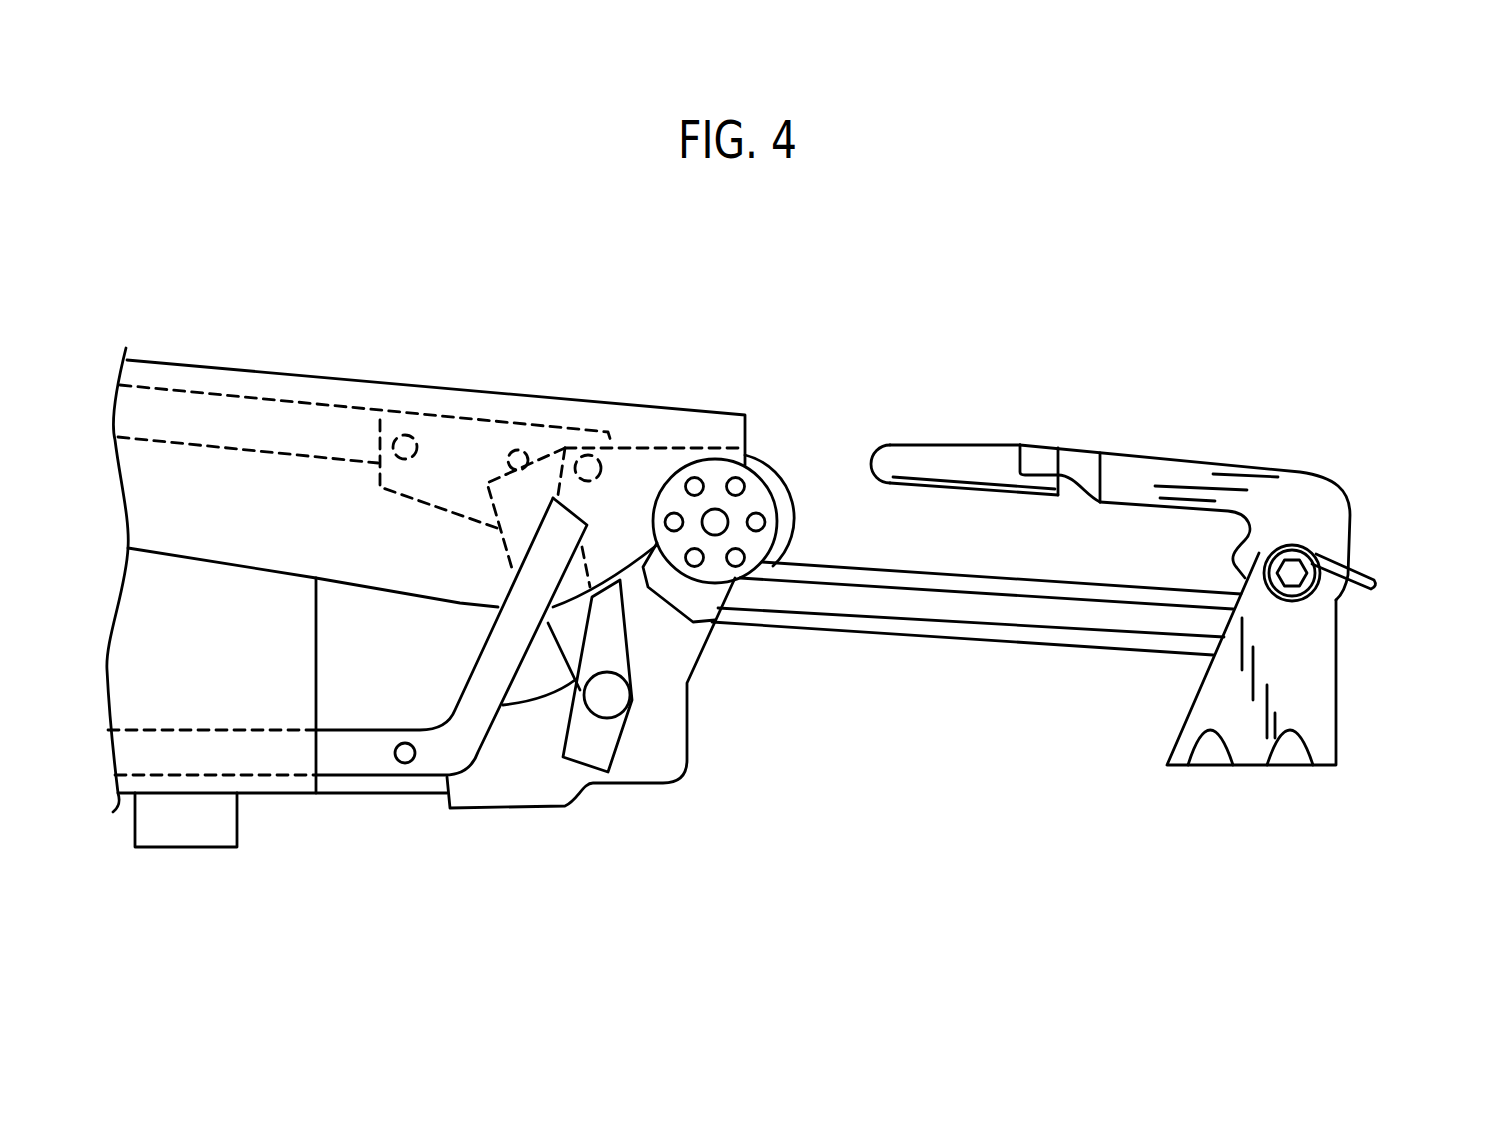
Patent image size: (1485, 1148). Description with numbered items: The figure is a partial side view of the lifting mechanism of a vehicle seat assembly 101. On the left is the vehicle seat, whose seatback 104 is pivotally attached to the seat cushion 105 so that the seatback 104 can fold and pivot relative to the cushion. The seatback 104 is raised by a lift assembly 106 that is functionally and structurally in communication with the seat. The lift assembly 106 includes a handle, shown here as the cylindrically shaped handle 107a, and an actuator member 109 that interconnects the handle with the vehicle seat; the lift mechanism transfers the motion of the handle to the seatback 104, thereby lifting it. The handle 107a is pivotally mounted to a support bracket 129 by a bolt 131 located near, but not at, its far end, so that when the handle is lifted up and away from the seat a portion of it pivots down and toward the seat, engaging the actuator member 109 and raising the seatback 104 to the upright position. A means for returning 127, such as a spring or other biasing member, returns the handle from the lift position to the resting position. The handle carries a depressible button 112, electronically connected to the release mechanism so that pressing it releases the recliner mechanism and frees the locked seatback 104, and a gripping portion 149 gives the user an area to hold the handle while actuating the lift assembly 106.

The vehicle seat assembly 101 is at (848, 783).
The seatback 104 is at (613, 403).
The seat cushion 105 is at (460, 752).
The lift assembly 106 is at (1045, 662).
The cylindrically shaped handle 107a is at (1138, 455).
The actuator member 109 is at (942, 612).
The depressible button 112 is at (870, 448).
The means for returning 127 is at (1360, 568).
The support bracket 129 is at (1297, 693).
The bolt 131 is at (1303, 592).
The gripping portion 149 is at (960, 425).